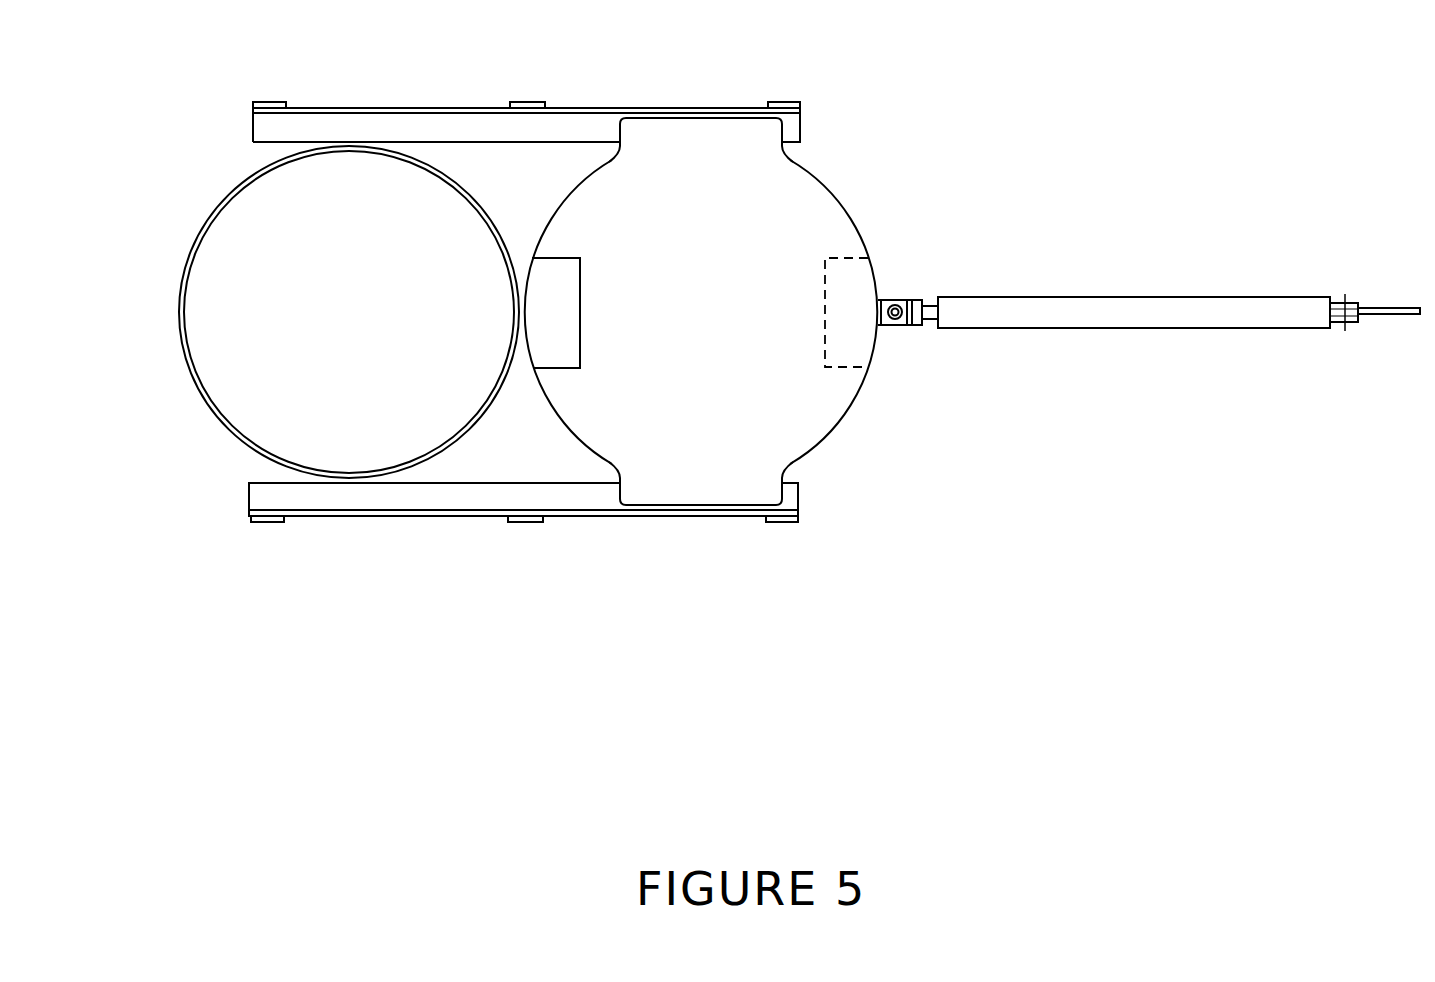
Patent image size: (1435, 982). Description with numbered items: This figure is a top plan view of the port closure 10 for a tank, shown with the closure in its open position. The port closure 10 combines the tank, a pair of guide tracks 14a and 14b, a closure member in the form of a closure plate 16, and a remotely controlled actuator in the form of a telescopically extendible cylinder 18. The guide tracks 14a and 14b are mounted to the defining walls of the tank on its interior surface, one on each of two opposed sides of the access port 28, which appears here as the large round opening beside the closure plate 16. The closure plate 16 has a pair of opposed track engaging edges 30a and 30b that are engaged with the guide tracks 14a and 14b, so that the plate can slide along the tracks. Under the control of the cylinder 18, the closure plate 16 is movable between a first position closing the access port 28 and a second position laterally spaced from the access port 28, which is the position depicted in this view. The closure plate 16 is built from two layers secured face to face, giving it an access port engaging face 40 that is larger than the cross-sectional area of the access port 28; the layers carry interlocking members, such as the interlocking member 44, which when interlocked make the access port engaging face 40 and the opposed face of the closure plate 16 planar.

The port closure 10 is at (157, 128).
The guide track 14a is at (438, 127).
The guide track 14b is at (383, 500).
The closure plate 16 is at (690, 209).
The telescopically extendible cylinder 18 is at (1152, 308).
The access port 28 is at (188, 376).
The track engaging edge 30a is at (710, 135).
The track engaging edge 30b is at (712, 490).
The access port engaging face 40 is at (768, 403).
The interlocking member 44 is at (543, 345).